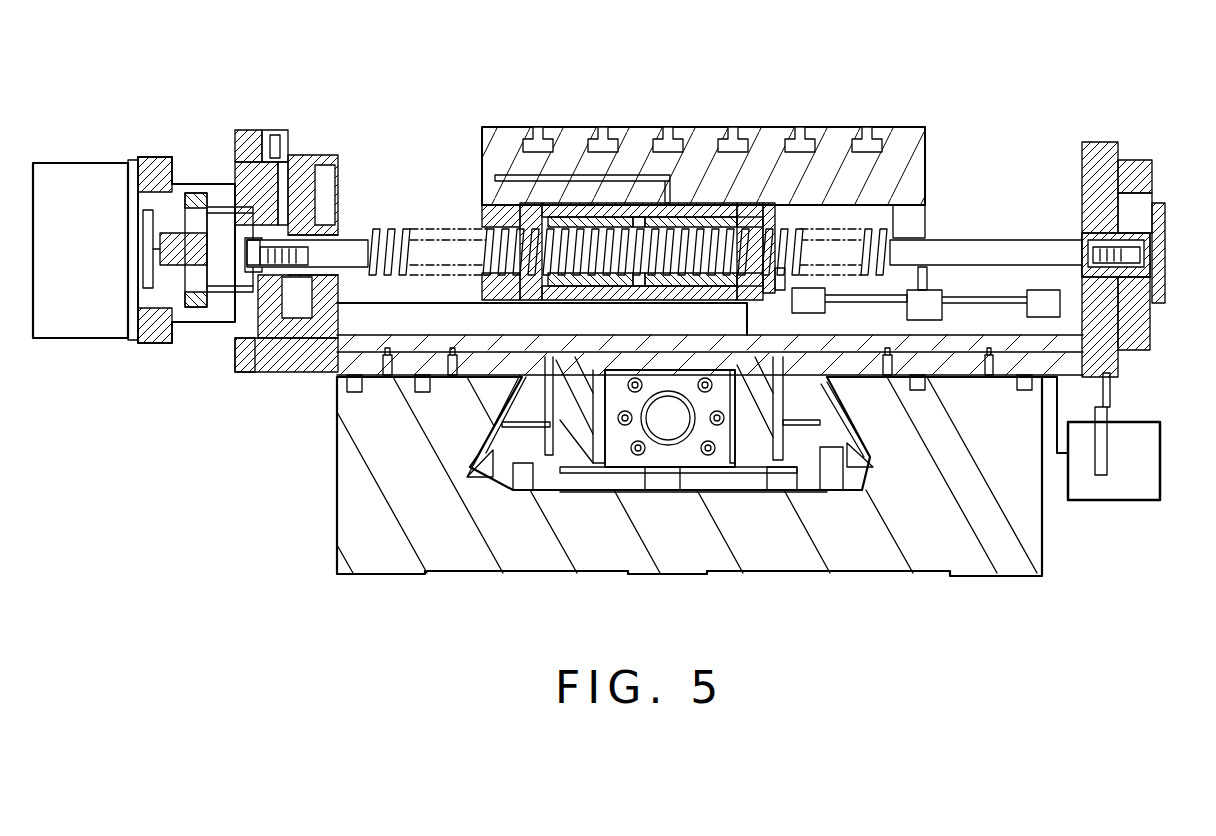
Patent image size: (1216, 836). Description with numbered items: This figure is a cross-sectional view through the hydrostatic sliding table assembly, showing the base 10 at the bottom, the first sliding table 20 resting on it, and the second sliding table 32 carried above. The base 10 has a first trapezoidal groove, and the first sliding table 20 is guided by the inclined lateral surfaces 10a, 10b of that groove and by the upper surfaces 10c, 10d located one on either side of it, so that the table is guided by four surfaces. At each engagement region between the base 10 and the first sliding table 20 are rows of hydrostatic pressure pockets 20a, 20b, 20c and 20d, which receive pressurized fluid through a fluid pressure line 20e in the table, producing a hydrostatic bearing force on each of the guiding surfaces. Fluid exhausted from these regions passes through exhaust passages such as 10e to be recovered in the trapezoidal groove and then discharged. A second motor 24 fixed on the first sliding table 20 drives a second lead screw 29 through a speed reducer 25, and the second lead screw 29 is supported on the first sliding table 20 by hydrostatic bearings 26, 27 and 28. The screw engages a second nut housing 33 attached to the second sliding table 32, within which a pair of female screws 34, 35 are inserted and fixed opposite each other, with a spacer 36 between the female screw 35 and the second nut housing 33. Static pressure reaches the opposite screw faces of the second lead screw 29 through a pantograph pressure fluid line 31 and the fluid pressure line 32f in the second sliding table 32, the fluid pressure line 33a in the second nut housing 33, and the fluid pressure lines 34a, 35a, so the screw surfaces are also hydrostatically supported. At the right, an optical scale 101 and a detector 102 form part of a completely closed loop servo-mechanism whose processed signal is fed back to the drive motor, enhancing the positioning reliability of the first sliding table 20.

The base 10 is at (408, 573).
The inclined lateral surface 10a is at (480, 458).
The inclined lateral surface 10b is at (874, 455).
The upper surface 10c is at (446, 383).
The upper surface 10d is at (982, 373).
The exhaust passage 10e is at (1020, 388).
The first sliding table 20 is at (800, 464).
The hydrostatic pressure pocket 20a is at (515, 466).
The hydrostatic pressure pocket 20b is at (843, 452).
The hydrostatic pressure pocket 20c is at (452, 375).
The hydrostatic pressure pocket 20d is at (998, 325).
The fluid pressure line 20e is at (866, 356).
The second motor 24 is at (106, 330).
The speed reducer 25 is at (240, 300).
The hydrostatic bearing 26 is at (252, 340).
The hydrostatic bearing 27 is at (312, 322).
The hydrostatic bearing 28 is at (1124, 200).
The second lead screw 29 is at (483, 243).
The pantograph pressure fluid line 31 is at (1040, 318).
The second sliding table 32 is at (895, 135).
The fluid pressure line 32f is at (667, 176).
The second nut housing 33 is at (747, 208).
The fluid pressure line 33a is at (742, 205).
The female screw 34 is at (778, 205).
The fluid pressure line 34a is at (765, 205).
The female screw 35 is at (527, 208).
The fluid pressure line 35a is at (620, 212).
The spacer 36 is at (570, 212).
The optical scale 101 is at (1104, 445).
The detector 102 is at (1140, 450).